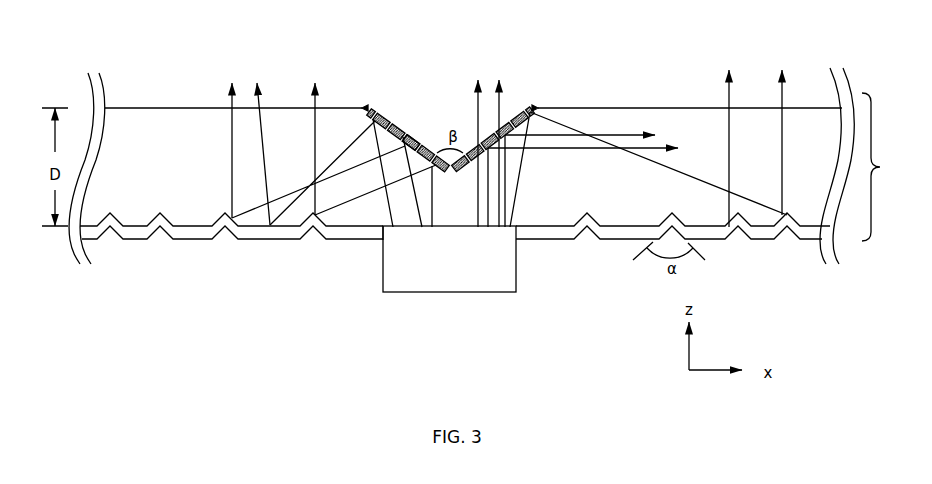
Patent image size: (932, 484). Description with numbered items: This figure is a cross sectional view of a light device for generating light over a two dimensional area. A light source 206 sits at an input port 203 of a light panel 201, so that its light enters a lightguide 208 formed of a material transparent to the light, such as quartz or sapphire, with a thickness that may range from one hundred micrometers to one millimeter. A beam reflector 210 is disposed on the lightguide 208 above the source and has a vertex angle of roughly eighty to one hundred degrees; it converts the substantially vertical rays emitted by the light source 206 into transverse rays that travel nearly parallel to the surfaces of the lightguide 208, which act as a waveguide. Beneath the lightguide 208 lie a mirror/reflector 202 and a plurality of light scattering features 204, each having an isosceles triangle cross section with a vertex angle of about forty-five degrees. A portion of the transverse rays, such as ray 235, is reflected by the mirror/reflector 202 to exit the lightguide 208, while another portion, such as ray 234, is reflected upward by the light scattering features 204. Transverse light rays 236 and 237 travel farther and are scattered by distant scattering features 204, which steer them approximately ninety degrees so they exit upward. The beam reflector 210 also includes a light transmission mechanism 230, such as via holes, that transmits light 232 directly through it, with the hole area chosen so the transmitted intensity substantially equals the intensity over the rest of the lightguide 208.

The light panel 201 is at (888, 167).
The mirror/reflector 202 is at (192, 241).
The input port 203 is at (380, 241).
The light scattering features 204 is at (151, 220).
The light source 206 is at (463, 282).
The lightguide 208 is at (166, 166).
The beam reflector 210 is at (387, 119).
The light transmission mechanism 230 is at (415, 147).
The transmitted light 232 is at (505, 83).
The transverse ray 234 is at (229, 82).
The transverse ray 235 is at (258, 87).
The transverse light ray 236 is at (602, 134).
The transverse light ray 237 is at (566, 149).